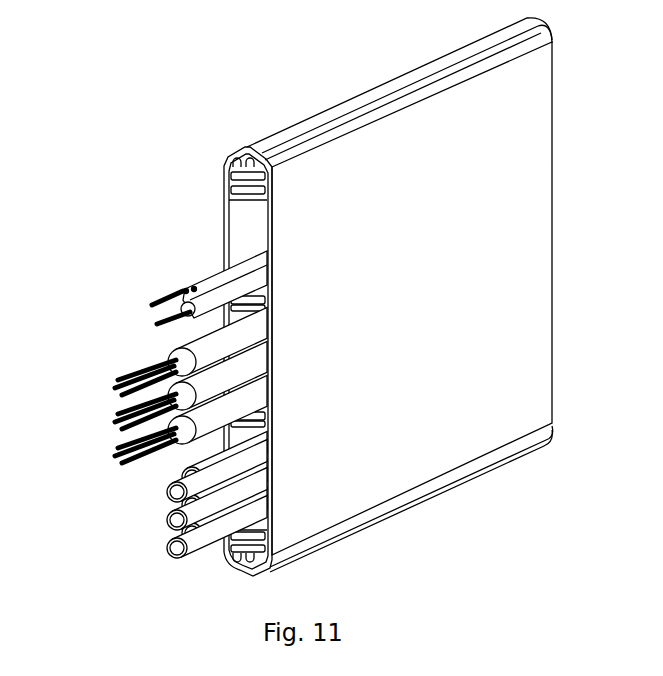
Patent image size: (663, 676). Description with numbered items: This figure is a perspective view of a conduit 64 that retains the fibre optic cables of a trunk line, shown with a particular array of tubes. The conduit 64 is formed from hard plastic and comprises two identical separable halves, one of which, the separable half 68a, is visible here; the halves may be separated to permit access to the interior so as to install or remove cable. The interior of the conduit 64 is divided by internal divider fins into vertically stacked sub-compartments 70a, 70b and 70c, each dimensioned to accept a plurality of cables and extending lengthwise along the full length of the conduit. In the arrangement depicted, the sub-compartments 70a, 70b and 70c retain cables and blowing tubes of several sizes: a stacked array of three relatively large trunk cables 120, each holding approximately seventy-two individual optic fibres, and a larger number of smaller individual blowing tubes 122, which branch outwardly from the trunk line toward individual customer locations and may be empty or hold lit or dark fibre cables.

The conduit 64 is at (198, 163).
The separable half 68a is at (412, 298).
The sub-compartment 70a is at (300, 202).
The sub-compartment 70b is at (300, 318).
The sub-compartment 70c is at (300, 434).
The trunk cables 120 is at (95, 375).
The blowing tubes 122 is at (157, 470).